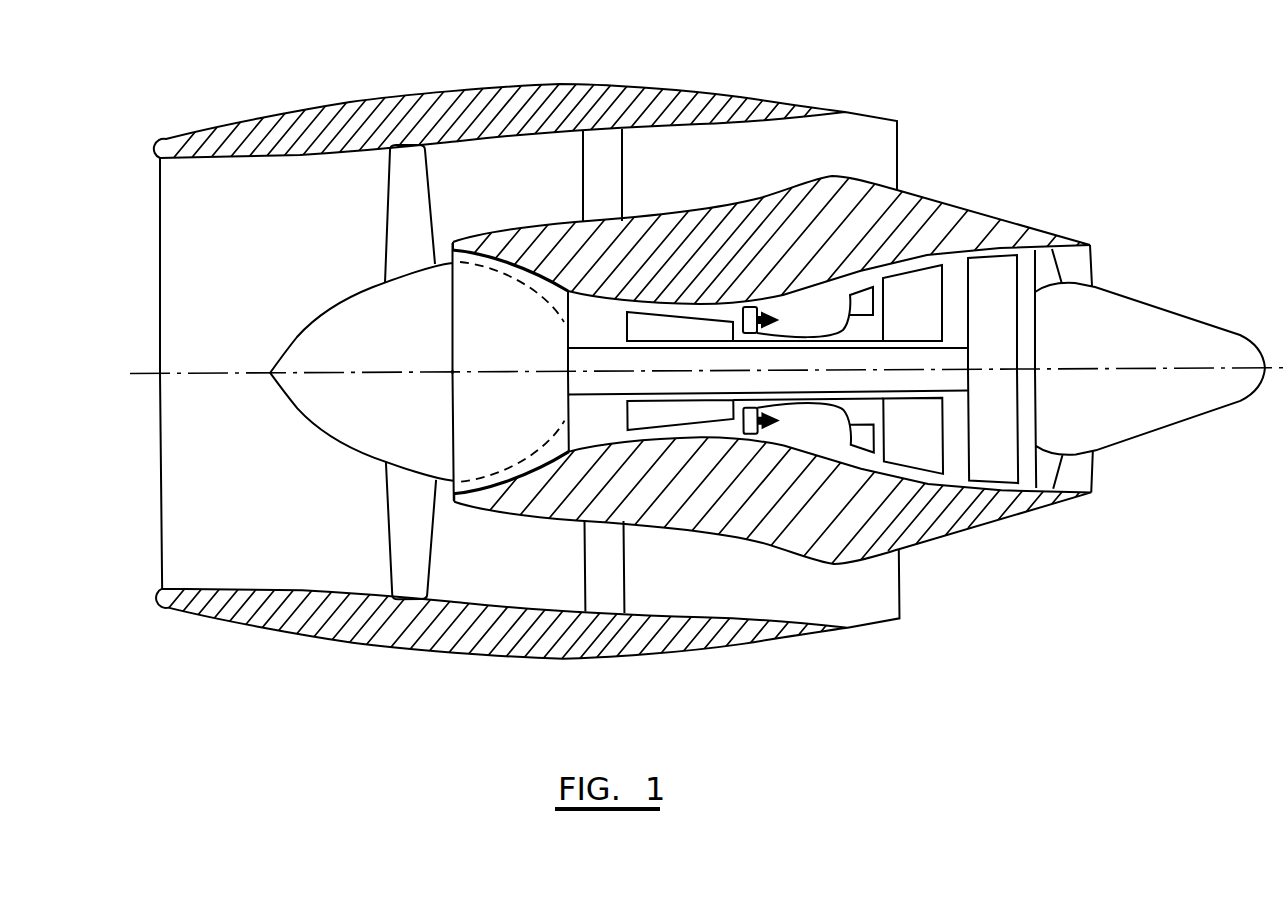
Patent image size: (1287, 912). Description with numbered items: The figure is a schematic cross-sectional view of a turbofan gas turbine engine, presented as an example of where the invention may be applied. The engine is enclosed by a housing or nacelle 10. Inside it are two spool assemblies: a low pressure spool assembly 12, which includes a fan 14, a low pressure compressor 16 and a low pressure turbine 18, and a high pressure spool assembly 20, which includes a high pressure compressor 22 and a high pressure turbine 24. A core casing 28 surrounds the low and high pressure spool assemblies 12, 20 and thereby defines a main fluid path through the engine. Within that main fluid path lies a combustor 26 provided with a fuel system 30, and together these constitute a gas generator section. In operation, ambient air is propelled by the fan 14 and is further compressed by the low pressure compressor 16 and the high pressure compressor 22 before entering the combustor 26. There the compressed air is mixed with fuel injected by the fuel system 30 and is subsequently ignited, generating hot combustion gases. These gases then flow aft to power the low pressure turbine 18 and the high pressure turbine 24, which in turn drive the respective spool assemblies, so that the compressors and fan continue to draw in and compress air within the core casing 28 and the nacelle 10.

The nacelle 10 is at (657, 87).
The low pressure spool assembly 12 is at (957, 347).
The fan 14 is at (386, 210).
The low pressure compressor 16 is at (490, 287).
The low pressure turbine 18 is at (1017, 277).
The high pressure spool assembly 20 is at (715, 337).
The high pressure compressor 22 is at (637, 327).
The high pressure turbine 24 is at (917, 272).
The combustor 26 is at (831, 427).
The core casing 28 is at (806, 177).
The fuel system 30 is at (753, 307).